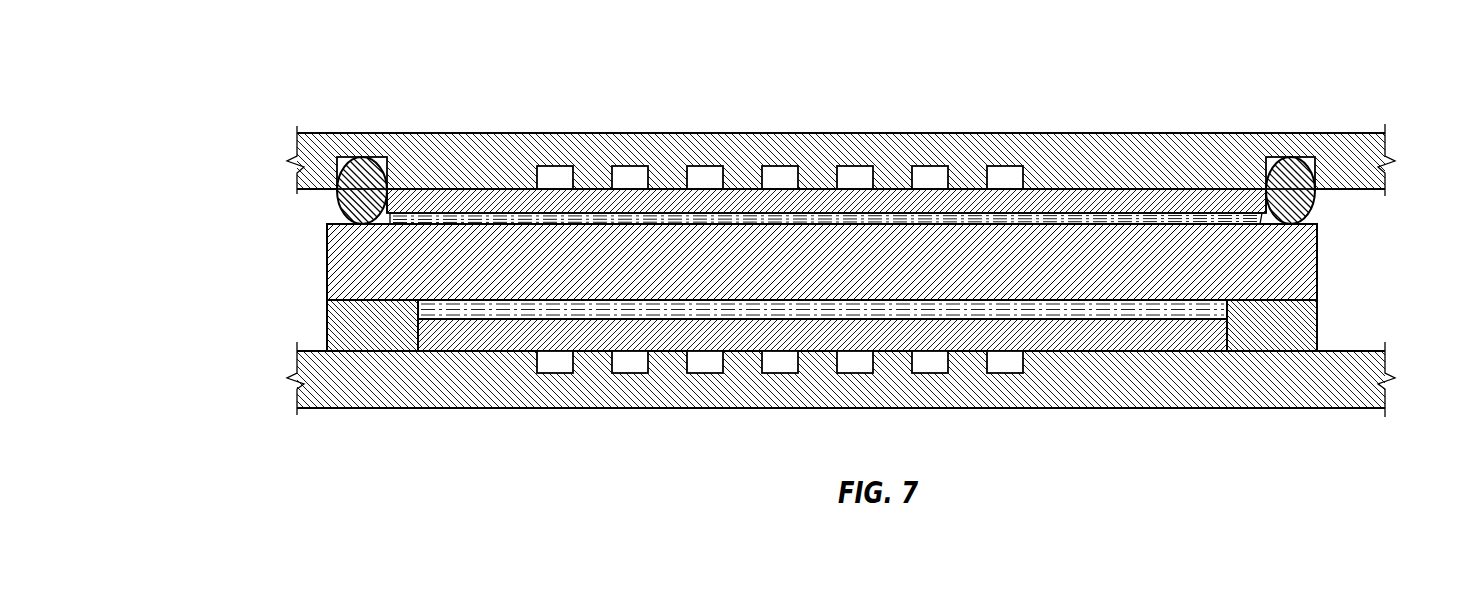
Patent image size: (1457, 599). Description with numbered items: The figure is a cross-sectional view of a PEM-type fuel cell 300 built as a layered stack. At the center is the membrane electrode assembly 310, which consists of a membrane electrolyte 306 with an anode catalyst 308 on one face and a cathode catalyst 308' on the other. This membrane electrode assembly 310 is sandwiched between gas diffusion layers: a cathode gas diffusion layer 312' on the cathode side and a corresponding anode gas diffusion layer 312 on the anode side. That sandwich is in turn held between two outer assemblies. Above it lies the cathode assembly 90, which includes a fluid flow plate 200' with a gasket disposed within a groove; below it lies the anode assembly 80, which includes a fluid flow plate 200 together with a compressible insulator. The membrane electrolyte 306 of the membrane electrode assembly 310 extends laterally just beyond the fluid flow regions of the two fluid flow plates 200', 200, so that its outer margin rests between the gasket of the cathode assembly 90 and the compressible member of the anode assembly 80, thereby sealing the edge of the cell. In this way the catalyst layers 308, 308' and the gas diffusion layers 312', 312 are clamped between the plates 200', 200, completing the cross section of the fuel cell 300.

The PEM-type fuel cell 300 is at (793, 27).
The cathode assembly 90 is at (252, 149).
The anode assembly 80 is at (252, 378).
The fluid flow plate 200' is at (867, 138).
The fluid flow plate 200 is at (841, 400).
The membrane electrode assembly 310 is at (252, 247).
The cathode gas diffusion layer 312' is at (826, 148).
The cathode catalyst 308' is at (733, 200).
The membrane electrolyte 306 is at (857, 261).
The anode catalyst 308 is at (739, 287).
The anode gas diffusion layer 312 is at (822, 389).